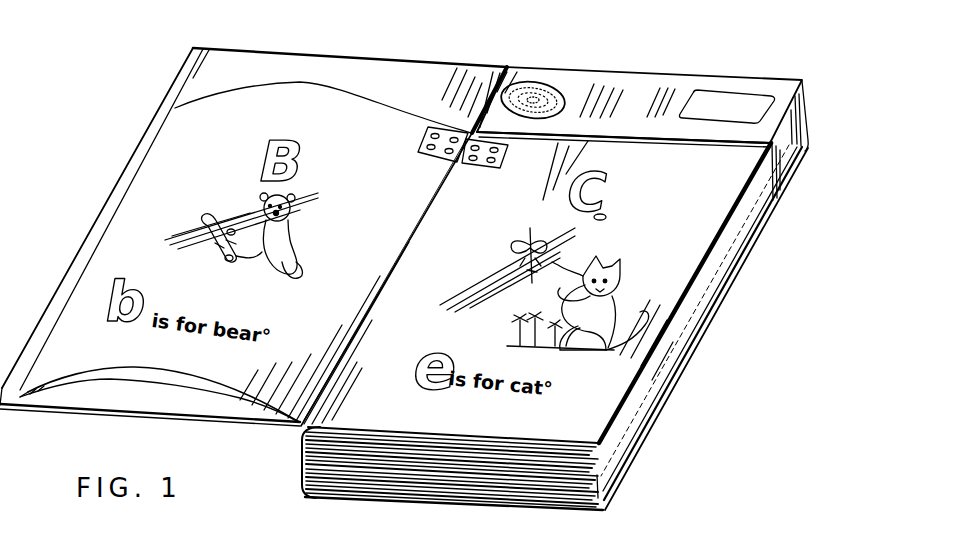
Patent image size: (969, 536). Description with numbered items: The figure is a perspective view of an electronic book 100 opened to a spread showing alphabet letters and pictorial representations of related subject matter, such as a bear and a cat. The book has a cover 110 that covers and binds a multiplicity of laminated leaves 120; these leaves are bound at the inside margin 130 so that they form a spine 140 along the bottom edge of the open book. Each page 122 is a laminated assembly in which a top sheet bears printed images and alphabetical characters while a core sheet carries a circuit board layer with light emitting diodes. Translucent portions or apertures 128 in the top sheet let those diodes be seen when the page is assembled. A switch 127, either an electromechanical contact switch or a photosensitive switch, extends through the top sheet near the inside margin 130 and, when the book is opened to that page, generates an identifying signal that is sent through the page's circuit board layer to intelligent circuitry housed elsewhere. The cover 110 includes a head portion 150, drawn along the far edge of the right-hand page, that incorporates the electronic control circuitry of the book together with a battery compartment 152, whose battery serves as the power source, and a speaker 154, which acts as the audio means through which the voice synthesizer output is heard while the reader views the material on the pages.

The electronic book 100 is at (651, 29).
The cover 110 is at (92, 418).
The laminated leaves 120 is at (112, 382).
The page 122 is at (330, 391).
The switch 127 is at (478, 170).
The apertures 128 is at (607, 214).
The inside margin 130 is at (484, 62).
The spine 140 is at (312, 461).
The head portion 150 is at (658, 86).
The battery compartment 152 is at (745, 98).
The speaker 154 is at (543, 83).